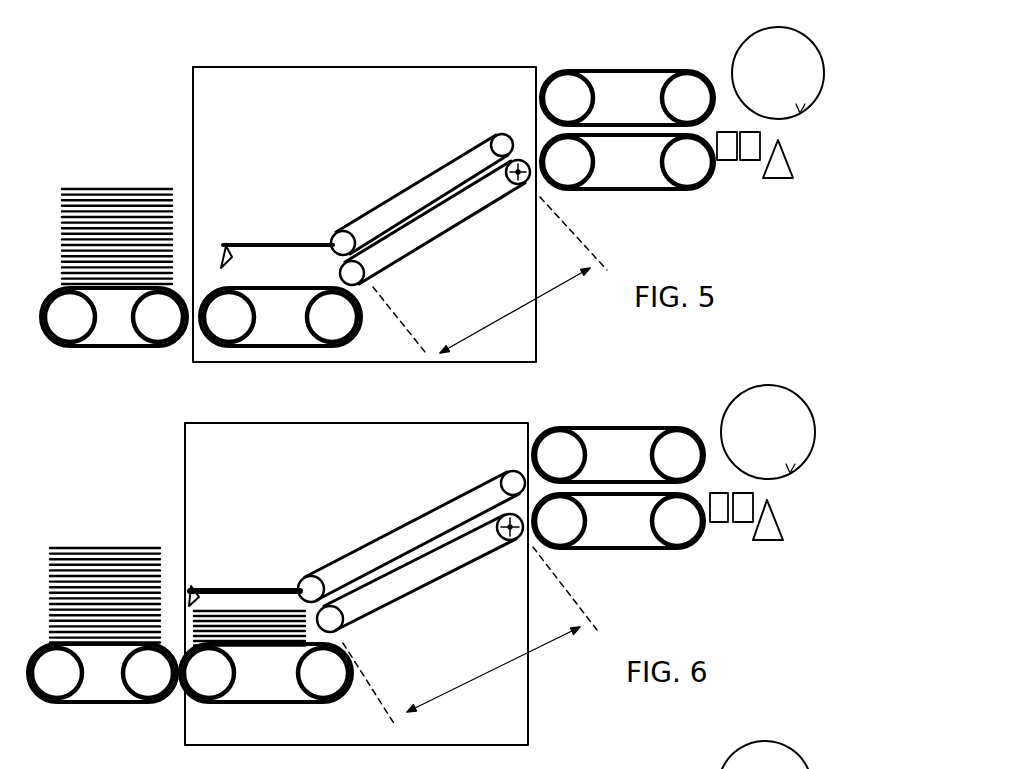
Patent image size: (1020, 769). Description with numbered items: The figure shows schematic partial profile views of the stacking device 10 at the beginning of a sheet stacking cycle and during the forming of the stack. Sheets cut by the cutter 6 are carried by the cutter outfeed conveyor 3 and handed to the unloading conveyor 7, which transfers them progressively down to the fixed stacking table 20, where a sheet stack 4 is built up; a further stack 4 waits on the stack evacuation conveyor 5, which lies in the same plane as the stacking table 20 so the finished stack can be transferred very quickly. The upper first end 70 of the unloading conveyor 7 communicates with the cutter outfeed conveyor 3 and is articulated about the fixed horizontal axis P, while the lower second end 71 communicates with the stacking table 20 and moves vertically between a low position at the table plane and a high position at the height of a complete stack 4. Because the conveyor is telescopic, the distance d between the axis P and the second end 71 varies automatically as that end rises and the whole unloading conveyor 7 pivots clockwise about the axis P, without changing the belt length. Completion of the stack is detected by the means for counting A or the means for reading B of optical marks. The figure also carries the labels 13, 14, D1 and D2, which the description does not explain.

In FIG. 5, the stacking device 10 is at (158, 94).
In FIG. 6, the stacking device 10 is at (146, 480).
In FIG. 5, the cutter outfeed conveyor 3 is at (630, 163).
In FIG. 6, the cutter outfeed conveyor 3 is at (620, 518).
In FIG. 5, the sheet stack 4 is at (113, 188).
In FIG. 6, the sheet stack 4 is at (108, 547).
In FIG. 5, the stack evacuation conveyor 5 is at (109, 325).
In FIG. 6, the stack evacuation conveyor 5 is at (100, 682).
In FIG. 5, the cutter 6 is at (757, 50).
In FIG. 6, the cutter 6 is at (750, 420).
In FIG. 5, the unloading conveyor 7 is at (441, 238).
In FIG. 6, the unloading conveyor 7 is at (420, 590).
In FIG. 5, the guide plate 13 is at (273, 243).
In FIG. 6, the guide plate 13 is at (250, 585).
In FIG. 5, the plate tip 14 is at (228, 243).
In FIG. 6, the plate tip 14 is at (206, 585).
In FIG. 5, the stacking table 20 is at (285, 320).
In FIG. 6, the stacking table 20 is at (272, 677).
In FIG. 5, the first end 70 is at (537, 187).
In FIG. 6, the first end 70 is at (535, 545).
In FIG. 5, the second end 71 is at (336, 232).
In FIG. 6, the second end 71 is at (304, 577).
In FIG. 5, the fixed horizontal axis P is at (513, 188).
In FIG. 6, the fixed horizontal axis P is at (505, 545).
In FIG. 5, the distance d is at (511, 343).
In FIG. 6, the distance d is at (504, 658).
In FIG. 5, the means for counting A is at (750, 162).
In FIG. 6, the means for counting A is at (740, 522).
In FIG. 5, the means for reading B is at (727, 162).
In FIG. 6, the means for reading B is at (718, 522).
In FIG. 5, the first region D1 is at (262, 66).
In FIG. 6, the second region D2 is at (528, 683).